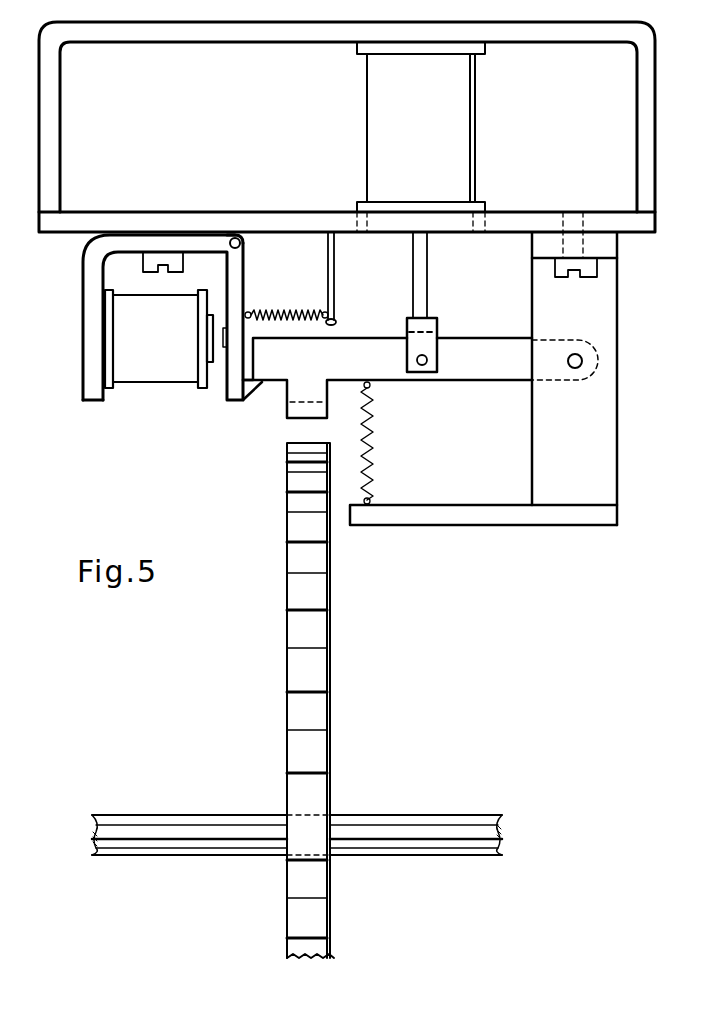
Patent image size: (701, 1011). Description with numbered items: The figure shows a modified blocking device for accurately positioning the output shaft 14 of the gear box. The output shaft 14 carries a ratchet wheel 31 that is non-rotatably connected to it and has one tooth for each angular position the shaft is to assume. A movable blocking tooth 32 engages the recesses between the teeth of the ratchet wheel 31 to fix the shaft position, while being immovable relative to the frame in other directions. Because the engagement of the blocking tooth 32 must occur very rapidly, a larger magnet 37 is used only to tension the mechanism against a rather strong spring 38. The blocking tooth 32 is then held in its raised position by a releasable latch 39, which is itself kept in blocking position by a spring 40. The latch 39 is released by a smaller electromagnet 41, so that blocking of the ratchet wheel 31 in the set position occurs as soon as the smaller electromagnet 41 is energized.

The output shaft 14 is at (436, 825).
The ratchet wheel 31 is at (320, 631).
The blocking tooth 32 is at (300, 380).
The larger magnet 37 is at (463, 168).
The spring 38 is at (372, 471).
The releasable latch 39 is at (242, 397).
The spring 40 is at (262, 313).
The smaller electromagnet 41 is at (165, 368).